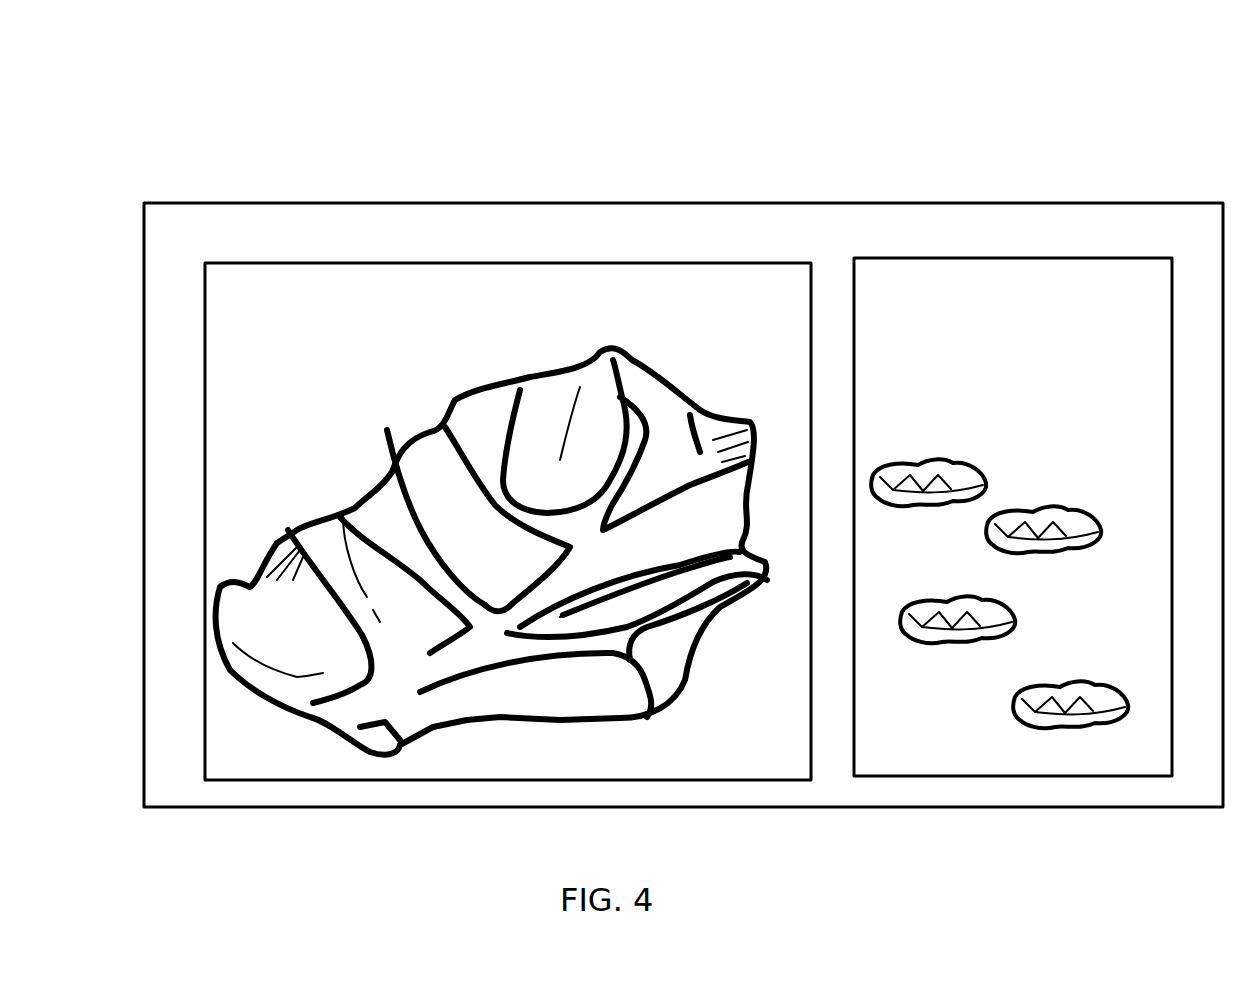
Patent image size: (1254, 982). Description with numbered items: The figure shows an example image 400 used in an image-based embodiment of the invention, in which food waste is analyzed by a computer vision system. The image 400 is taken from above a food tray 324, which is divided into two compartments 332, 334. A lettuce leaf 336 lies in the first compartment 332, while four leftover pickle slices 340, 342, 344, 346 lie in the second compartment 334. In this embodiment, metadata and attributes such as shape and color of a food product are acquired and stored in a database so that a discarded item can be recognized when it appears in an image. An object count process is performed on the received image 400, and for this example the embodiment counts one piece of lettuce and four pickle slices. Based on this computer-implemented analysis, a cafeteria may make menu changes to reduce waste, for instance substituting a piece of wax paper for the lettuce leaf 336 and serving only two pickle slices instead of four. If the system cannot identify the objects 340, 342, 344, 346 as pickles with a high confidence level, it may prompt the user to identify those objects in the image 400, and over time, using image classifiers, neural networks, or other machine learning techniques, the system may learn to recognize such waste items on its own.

The example image 400 is at (235, 90).
The food tray 324 is at (165, 201).
The first compartment 332 is at (297, 261).
The compartment 334 is at (943, 256).
The lettuce leaf 336 is at (510, 385).
The pickle slice 340 is at (949, 455).
The pickle slice 342 is at (1024, 505).
The pickle slice 344 is at (936, 590).
The pickle slice 346 is at (1049, 675).